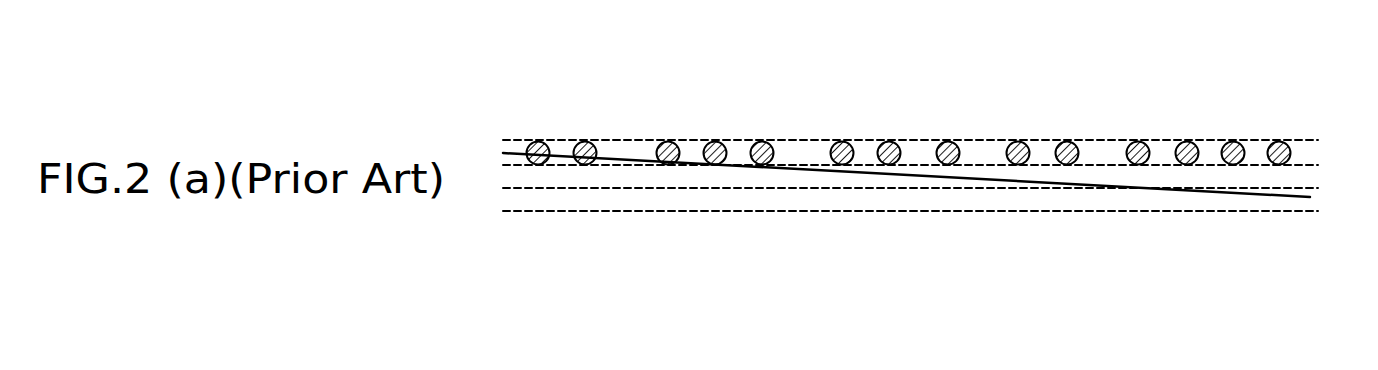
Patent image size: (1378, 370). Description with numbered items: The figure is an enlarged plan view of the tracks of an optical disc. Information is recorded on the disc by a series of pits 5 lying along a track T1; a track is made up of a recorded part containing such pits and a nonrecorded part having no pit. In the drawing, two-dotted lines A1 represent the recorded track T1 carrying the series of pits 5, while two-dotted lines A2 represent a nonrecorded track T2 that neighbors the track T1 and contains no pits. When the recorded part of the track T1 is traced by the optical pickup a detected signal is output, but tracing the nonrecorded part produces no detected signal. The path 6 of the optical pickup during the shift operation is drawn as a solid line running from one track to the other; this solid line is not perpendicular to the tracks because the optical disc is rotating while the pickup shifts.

The pits 5 is at (673, 141).
The path of the optical pickup 6 is at (1310, 197).
The recorded track T1 is at (1100, 152).
The nonrecorded track T2 is at (1055, 200).
The two-dotted lines representing the recorded track A1 is at (1253, 163).
The two-dotted lines representing the nonrecorded track A2 is at (1240, 185).